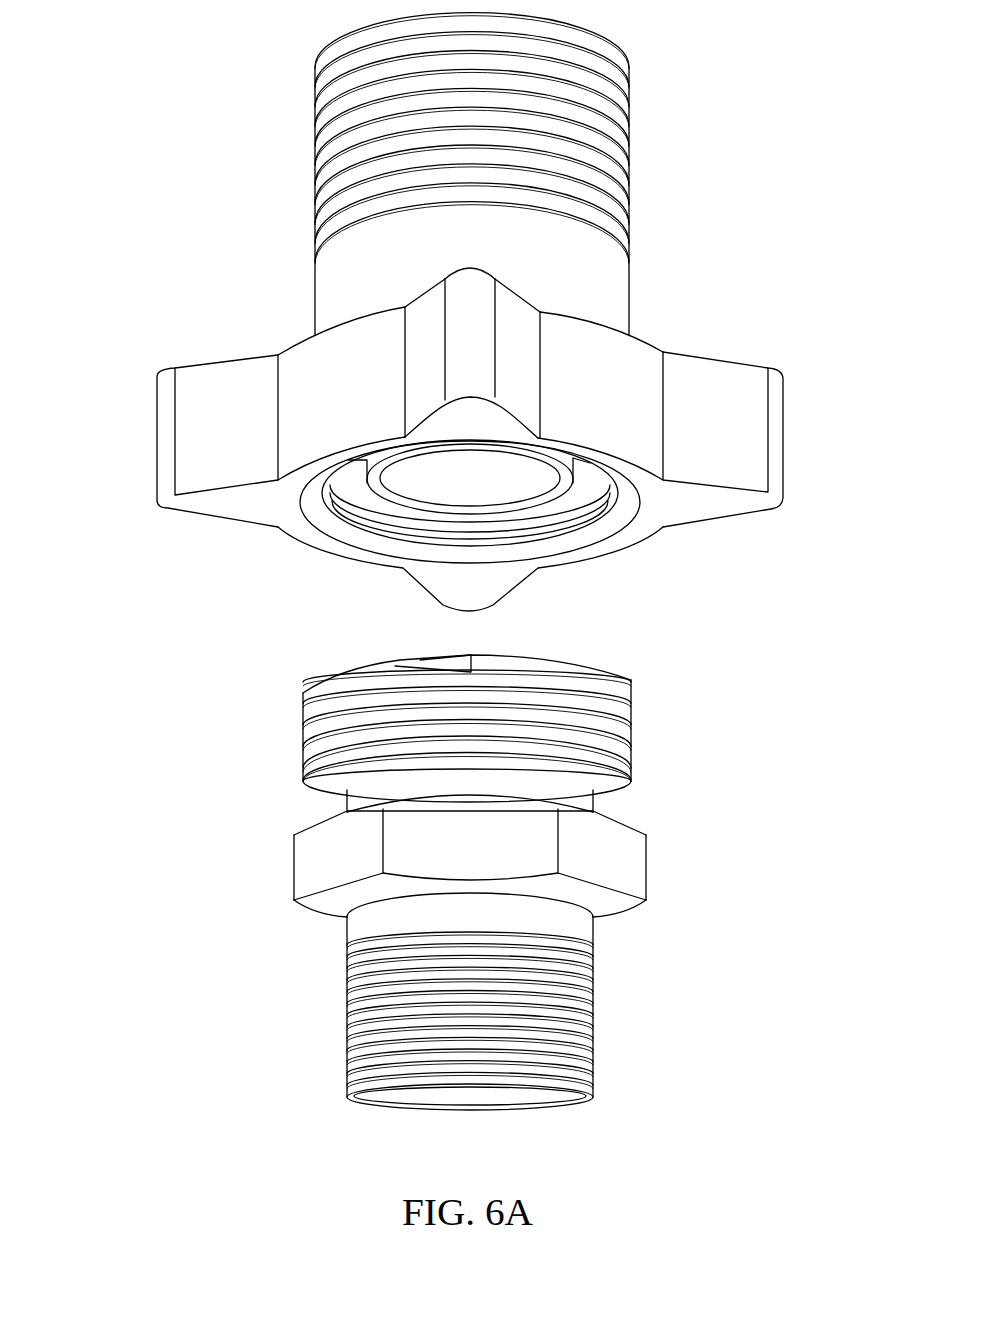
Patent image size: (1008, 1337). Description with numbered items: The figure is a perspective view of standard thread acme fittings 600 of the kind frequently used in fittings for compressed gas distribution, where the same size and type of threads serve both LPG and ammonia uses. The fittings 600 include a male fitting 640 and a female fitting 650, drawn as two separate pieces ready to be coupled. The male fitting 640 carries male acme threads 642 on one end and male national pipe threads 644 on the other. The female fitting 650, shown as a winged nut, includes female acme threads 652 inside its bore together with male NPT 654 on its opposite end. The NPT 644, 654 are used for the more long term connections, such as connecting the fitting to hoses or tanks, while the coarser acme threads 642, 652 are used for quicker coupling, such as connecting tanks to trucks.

The standard thread acme fittings 600 is at (462, 561).
The male fitting 640 is at (628, 862).
The male acme threads 642 is at (633, 710).
The male national pipe threads (NPT) 644 is at (583, 1023).
The female fitting 650 is at (513, 439).
The female acme threads 652 is at (588, 508).
The male NPT 654 is at (623, 152).